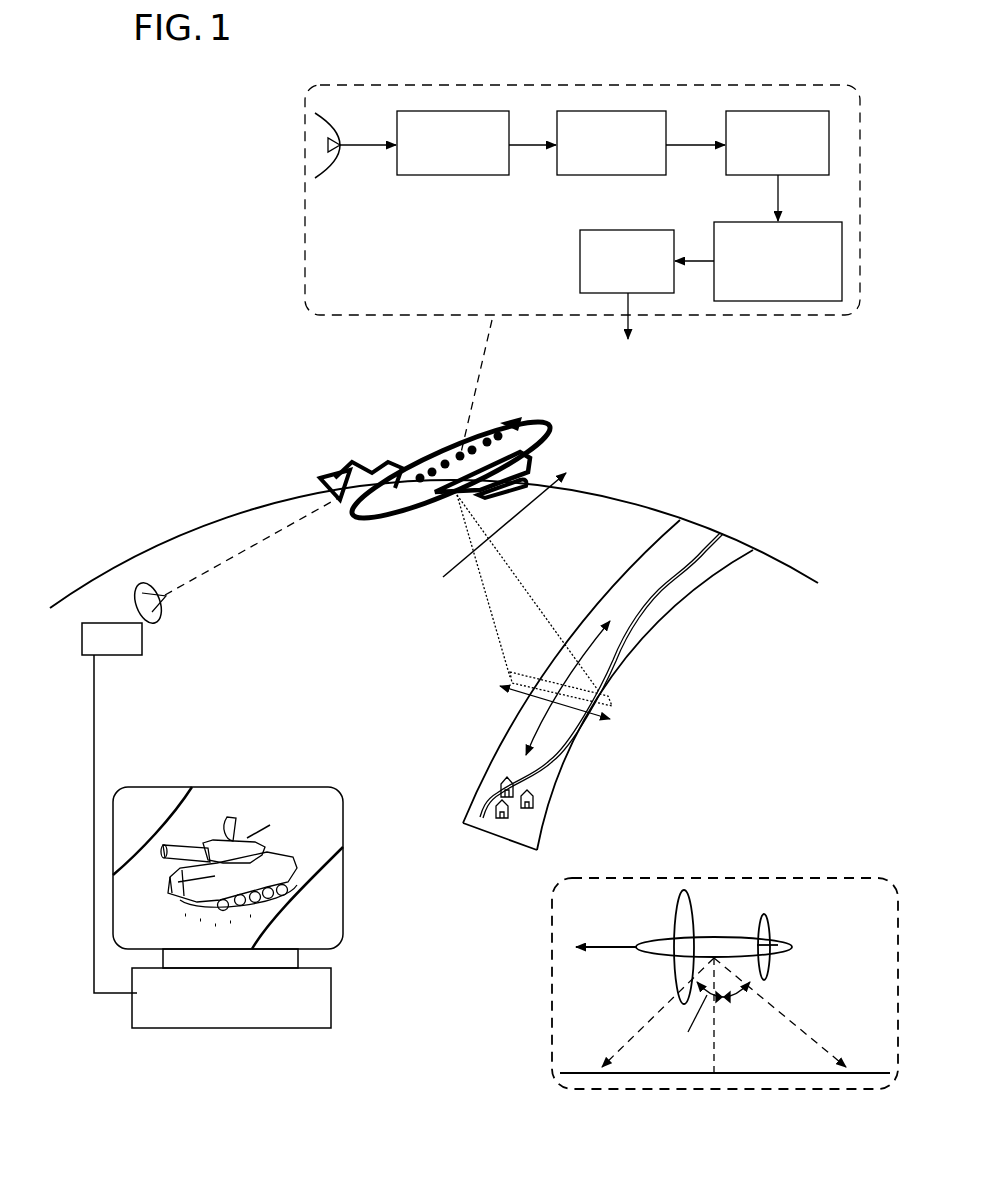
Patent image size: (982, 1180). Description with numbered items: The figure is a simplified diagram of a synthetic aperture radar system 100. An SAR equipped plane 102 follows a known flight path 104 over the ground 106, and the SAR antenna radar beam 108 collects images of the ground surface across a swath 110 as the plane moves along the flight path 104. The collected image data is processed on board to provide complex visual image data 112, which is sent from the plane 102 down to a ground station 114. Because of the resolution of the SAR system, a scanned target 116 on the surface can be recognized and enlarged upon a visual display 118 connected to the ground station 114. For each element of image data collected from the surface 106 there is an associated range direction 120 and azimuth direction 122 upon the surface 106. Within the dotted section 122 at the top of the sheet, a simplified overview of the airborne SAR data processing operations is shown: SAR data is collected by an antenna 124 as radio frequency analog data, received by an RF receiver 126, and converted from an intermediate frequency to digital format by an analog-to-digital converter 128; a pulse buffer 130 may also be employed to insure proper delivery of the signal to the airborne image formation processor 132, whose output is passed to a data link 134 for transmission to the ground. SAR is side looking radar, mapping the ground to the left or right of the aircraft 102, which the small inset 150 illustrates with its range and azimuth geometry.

The synthetic aperture radar imaging system 100 is at (246, 371).
The SAR equipped plane 102 is at (430, 452).
The flight path 104 is at (486, 531).
The ground 106 is at (615, 515).
The SAR antenna radar beam 108 is at (490, 614).
The swath 110 is at (522, 704).
The complex visual image data 112 is at (243, 552).
The ground station 114 is at (142, 652).
The scanned target 116 is at (606, 687).
The visual display 118 is at (250, 787).
The range direction 120 is at (513, 690).
The azimuth direction 122 is at (305, 215).
The antenna 124 is at (325, 112).
The RF receiver 126 is at (427, 111).
The analog-to-digital converter 128 is at (578, 111).
The pulse buffer 130 is at (740, 111).
The airborne image formation processor 132 is at (787, 301).
The data link 134 is at (580, 270).
The inset 150 is at (685, 878).